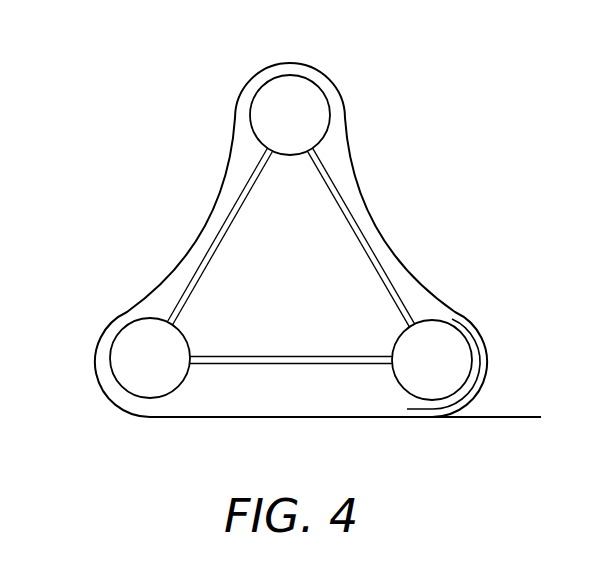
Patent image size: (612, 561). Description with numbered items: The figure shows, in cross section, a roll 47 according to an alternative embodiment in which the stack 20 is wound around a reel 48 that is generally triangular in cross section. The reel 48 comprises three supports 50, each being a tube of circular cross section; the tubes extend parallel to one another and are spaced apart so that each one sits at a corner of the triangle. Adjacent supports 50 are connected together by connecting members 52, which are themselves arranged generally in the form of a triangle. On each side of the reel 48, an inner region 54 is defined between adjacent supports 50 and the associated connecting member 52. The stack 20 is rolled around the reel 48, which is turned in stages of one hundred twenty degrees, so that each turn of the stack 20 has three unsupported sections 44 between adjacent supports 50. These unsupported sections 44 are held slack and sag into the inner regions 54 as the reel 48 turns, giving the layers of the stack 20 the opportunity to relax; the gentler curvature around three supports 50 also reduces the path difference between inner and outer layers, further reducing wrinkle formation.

The stack 20 is at (517, 415).
The unsupported sections 44 is at (219, 190).
The roll 47 is at (104, 201).
The reel 48 is at (347, 165).
The supports 50 is at (287, 82).
The connecting members 52 is at (348, 220).
The inner region 54 is at (181, 269).